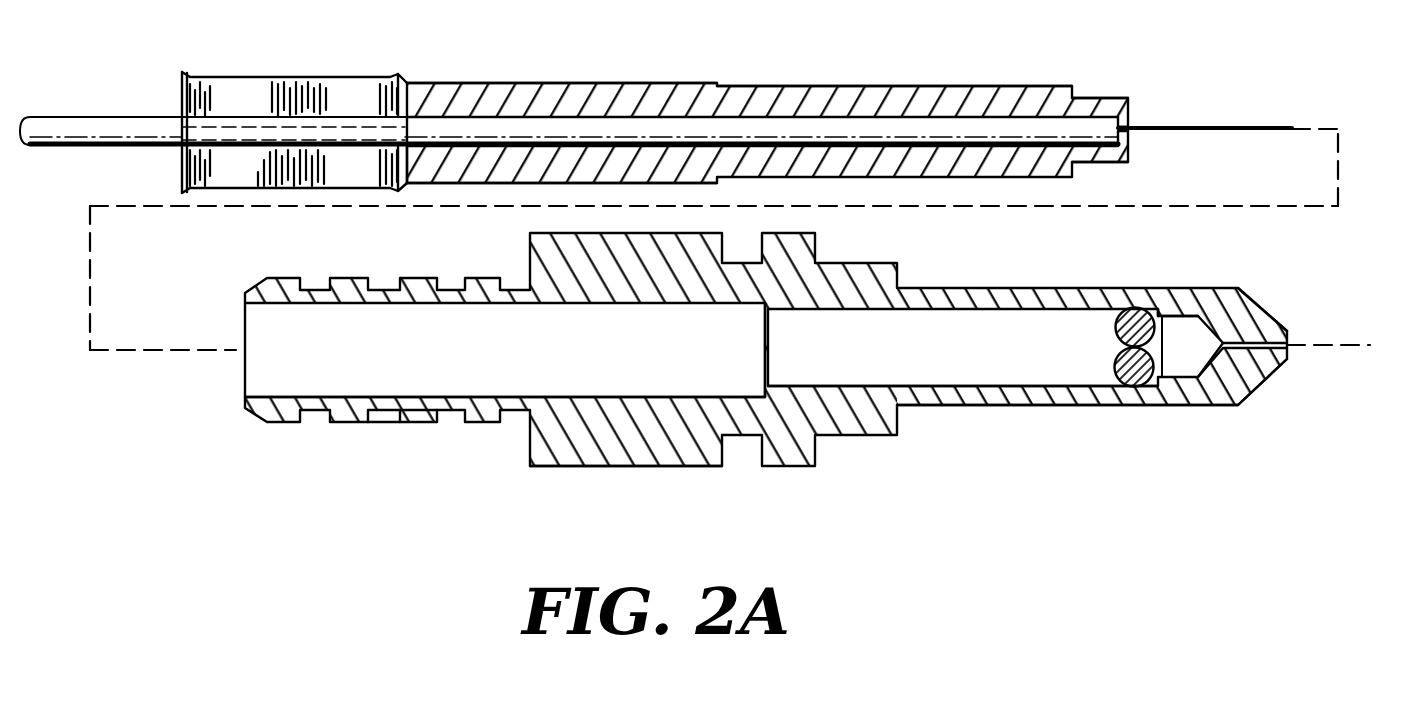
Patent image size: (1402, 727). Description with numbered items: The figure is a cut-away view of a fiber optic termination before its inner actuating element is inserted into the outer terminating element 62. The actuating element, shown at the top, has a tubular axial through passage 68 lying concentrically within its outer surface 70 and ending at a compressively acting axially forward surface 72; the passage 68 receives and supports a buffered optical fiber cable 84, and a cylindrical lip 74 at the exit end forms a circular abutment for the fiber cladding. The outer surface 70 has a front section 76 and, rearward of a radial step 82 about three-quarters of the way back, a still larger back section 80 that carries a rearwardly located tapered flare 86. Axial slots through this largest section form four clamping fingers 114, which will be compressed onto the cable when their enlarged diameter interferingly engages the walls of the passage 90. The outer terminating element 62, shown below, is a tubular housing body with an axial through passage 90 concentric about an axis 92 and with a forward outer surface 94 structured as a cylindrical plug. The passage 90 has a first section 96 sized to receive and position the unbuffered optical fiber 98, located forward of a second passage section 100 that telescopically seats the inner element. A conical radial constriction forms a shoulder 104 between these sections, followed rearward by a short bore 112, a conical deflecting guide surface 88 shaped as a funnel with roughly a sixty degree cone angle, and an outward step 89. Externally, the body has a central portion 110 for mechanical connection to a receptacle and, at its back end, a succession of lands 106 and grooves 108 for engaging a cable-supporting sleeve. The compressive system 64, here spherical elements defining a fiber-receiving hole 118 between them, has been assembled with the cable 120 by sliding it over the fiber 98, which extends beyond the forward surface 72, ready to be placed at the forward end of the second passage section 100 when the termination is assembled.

The outer terminating element 62 is at (1218, 468).
The compressive system 64 is at (1113, 320).
The tubular axial through passage 68 is at (918, 102).
The outer surface 70 is at (773, 83).
The compressively acting axially forward surface 72 is at (1133, 105).
The cylindrical lip 74 is at (1132, 124).
The front section 76 is at (1108, 163).
The back section 80 is at (480, 183).
The step 82 is at (407, 185).
The buffered optical fiber cable 84 is at (648, 92).
The tapered flare 86 is at (187, 195).
The conical deflecting guide surface 88 is at (1158, 312).
The outward step 89 is at (773, 300).
The axial through passage 90 is at (944, 359).
The axis 92 is at (1353, 343).
The forward outer surface 94 is at (1067, 407).
The first passage section 96 is at (1277, 330).
The unbuffered optical fiber 98 is at (1235, 131).
The second passage section 100 is at (428, 397).
The shoulder 104 is at (1258, 377).
The lands 106 is at (425, 423).
The grooves 108 is at (385, 423).
The central portion 110 is at (620, 467).
The short bore 112 is at (1185, 330).
The clamping fingers 114 is at (182, 82).
The fiber-receiving hole 118 is at (1158, 352).
The cable 120 is at (88, 117).